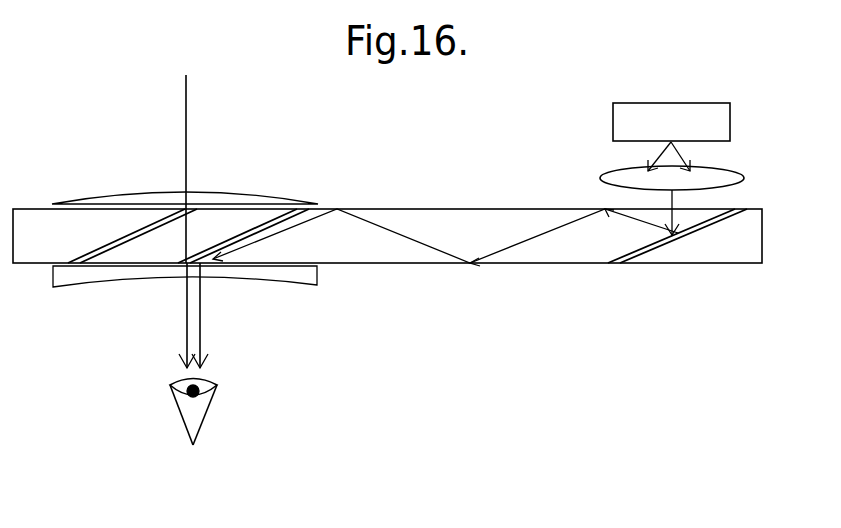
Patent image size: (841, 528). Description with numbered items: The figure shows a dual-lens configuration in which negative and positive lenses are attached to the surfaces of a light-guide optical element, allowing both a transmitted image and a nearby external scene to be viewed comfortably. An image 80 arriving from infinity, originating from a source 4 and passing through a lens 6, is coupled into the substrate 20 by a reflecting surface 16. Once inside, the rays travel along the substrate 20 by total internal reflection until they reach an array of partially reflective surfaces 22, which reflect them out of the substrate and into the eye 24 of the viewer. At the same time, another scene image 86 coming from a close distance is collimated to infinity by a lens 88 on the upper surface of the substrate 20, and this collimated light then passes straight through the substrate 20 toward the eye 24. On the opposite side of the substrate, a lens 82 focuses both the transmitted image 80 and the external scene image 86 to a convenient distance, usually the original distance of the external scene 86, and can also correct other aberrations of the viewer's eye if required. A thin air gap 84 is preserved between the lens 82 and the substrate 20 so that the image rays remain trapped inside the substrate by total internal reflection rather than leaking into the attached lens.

The light source / image projector 4 is at (730, 123).
The collimating lens 6 is at (743, 178).
The reflecting surface 16 is at (696, 233).
The substrate 20 is at (476, 236).
The array of partially reflective surfaces 22 is at (258, 225).
The eye 24 is at (183, 424).
The image from infinity 80 is at (662, 200).
The lens 82 is at (240, 270).
The air gap 84 is at (317, 275).
The scene image 86 is at (186, 110).
The lens 88 is at (150, 199).